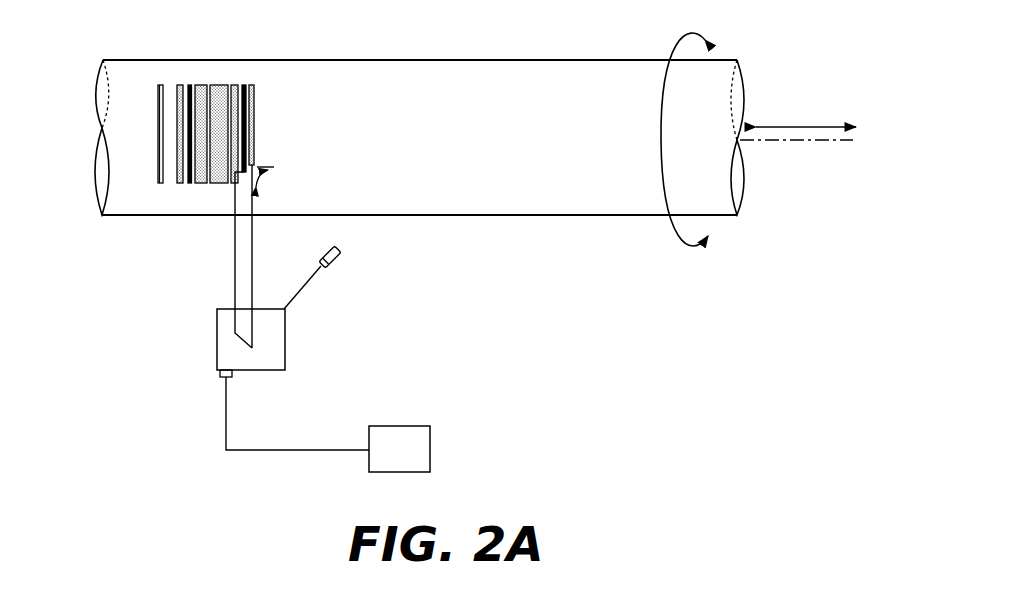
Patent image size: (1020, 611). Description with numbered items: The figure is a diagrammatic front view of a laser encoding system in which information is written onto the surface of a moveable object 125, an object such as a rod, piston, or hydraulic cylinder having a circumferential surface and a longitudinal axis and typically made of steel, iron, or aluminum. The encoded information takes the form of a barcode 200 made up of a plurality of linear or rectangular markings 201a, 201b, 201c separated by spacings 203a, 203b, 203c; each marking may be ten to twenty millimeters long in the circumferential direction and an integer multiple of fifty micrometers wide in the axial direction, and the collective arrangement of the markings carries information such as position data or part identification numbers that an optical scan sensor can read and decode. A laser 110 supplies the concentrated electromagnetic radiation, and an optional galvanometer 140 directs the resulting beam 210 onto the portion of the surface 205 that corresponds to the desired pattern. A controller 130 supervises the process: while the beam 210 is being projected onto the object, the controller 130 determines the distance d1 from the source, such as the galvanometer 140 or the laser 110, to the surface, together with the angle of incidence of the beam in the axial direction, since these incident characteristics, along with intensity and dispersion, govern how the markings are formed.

The moveable object 125 is at (401, 60).
The barcode 200 is at (141, 137).
The drum surface 205 is at (482, 87).
The marking 201a is at (162, 183).
The marking 201b is at (197, 183).
The marking 201c is at (247, 85).
The spacing 203a is at (168, 85).
The spacing 203b is at (189, 85).
The spacing 203c is at (210, 85).
The beam 210 is at (252, 238).
The laser 110 is at (334, 266).
The galvanometer 140 is at (217, 352).
The controller 130 is at (430, 449).
The distance d1 is at (235, 297).